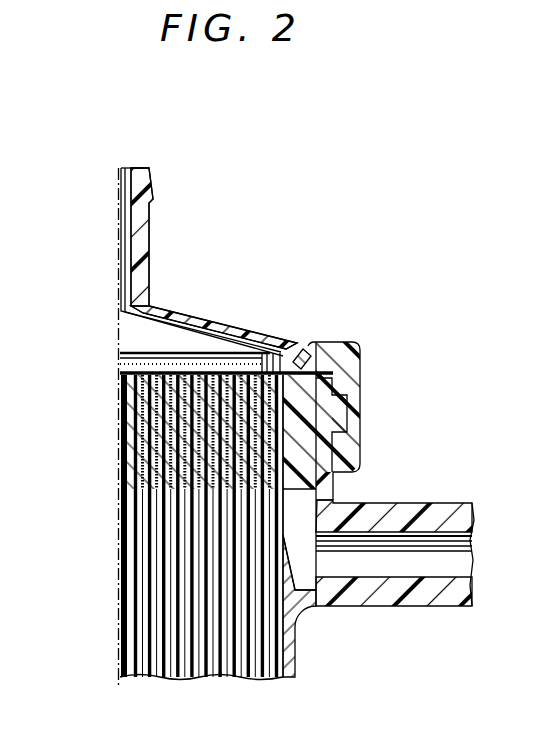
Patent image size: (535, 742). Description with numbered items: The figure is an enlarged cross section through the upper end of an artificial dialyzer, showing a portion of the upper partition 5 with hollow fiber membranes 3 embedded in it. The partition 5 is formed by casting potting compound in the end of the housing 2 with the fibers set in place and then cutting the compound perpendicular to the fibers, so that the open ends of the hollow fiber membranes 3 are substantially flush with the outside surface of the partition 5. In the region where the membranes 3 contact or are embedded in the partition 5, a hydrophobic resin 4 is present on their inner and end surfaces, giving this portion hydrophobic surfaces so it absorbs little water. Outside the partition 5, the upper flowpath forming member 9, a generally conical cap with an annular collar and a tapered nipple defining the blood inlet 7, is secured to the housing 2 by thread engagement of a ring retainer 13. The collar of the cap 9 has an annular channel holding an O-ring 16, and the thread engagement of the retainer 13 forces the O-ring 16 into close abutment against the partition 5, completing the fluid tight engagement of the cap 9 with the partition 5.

The housing 2 is at (290, 664).
The hollow fiber membranes 3 is at (187, 516).
The hydrophobic resin 4 is at (124, 425).
The upper partition 5 is at (293, 440).
The blood inlet 7 is at (121, 168).
The upper flowpath forming member 9 is at (140, 258).
The ring retainer 13 is at (348, 363).
The O-ring 16 is at (301, 352).